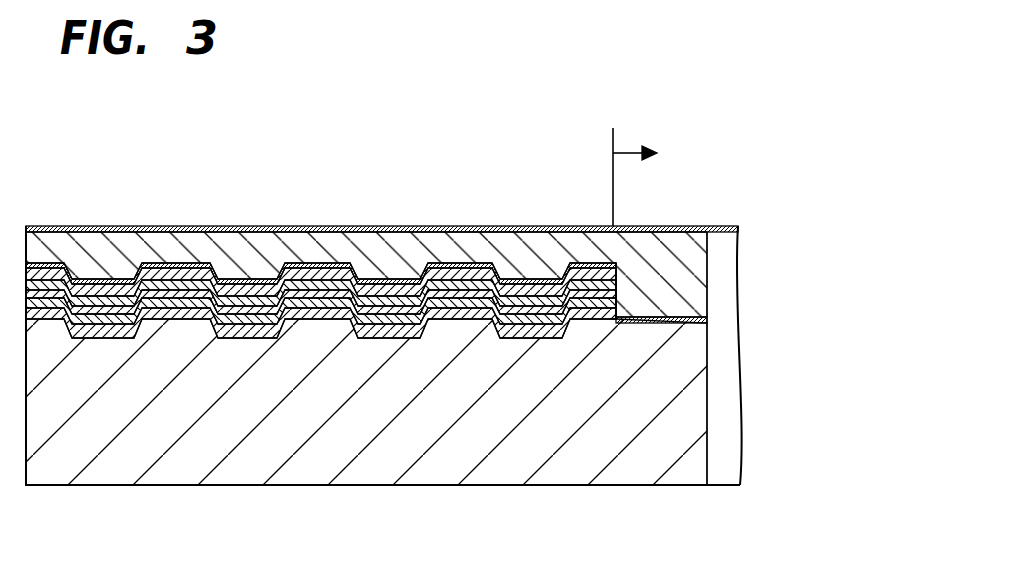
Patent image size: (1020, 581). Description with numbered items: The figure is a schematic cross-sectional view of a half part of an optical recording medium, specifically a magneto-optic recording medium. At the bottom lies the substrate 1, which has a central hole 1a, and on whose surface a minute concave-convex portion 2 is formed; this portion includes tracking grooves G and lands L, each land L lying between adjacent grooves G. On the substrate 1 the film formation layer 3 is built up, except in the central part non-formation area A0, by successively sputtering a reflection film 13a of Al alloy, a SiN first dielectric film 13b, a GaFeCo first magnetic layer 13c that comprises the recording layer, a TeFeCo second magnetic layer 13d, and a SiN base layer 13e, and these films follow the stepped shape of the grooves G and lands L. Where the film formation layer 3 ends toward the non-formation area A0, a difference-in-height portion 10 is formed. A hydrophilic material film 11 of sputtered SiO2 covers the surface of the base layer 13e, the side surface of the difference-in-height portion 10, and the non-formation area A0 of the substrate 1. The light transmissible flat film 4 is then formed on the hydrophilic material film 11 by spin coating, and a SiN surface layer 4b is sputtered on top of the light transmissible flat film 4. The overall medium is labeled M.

The substrate 1 is at (694, 466).
The central hole 1a is at (707, 403).
The minute concave-convex portion 2 is at (215, 165).
The groove G is at (102, 338).
The land L is at (178, 325).
The film formation layer 3 is at (830, 250).
The light transmissible flat film 4 is at (612, 258).
The surface layer 4b is at (615, 226).
The difference-in-height portion 10 is at (620, 266).
The hydrophilic material film 11 is at (640, 252).
The reflection film 13a is at (620, 322).
The first dielectric film 13b is at (620, 308).
The first magnetic layer 13c is at (620, 294).
The second magnetic layer 13d is at (620, 285).
The base layer 13e is at (620, 263).
The central part non-formation area A0 is at (653, 177).
The medium M is at (556, 563).